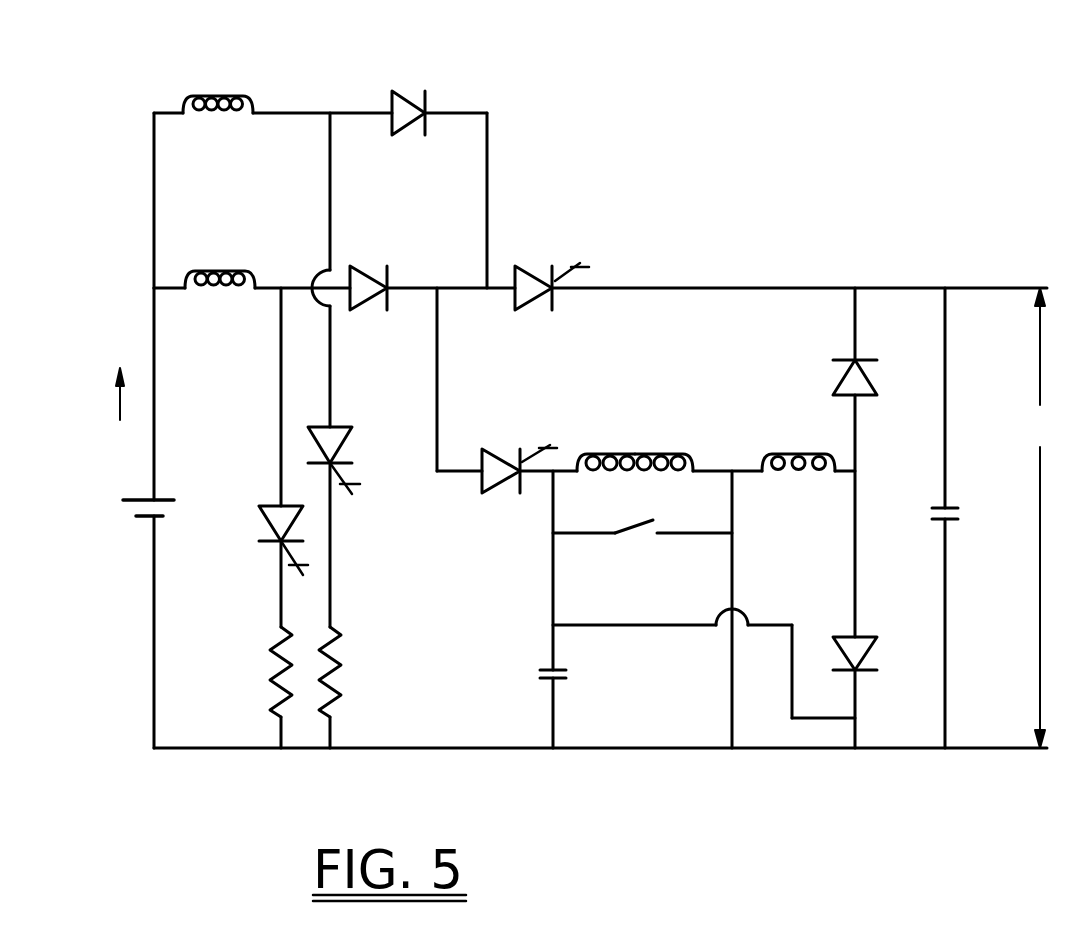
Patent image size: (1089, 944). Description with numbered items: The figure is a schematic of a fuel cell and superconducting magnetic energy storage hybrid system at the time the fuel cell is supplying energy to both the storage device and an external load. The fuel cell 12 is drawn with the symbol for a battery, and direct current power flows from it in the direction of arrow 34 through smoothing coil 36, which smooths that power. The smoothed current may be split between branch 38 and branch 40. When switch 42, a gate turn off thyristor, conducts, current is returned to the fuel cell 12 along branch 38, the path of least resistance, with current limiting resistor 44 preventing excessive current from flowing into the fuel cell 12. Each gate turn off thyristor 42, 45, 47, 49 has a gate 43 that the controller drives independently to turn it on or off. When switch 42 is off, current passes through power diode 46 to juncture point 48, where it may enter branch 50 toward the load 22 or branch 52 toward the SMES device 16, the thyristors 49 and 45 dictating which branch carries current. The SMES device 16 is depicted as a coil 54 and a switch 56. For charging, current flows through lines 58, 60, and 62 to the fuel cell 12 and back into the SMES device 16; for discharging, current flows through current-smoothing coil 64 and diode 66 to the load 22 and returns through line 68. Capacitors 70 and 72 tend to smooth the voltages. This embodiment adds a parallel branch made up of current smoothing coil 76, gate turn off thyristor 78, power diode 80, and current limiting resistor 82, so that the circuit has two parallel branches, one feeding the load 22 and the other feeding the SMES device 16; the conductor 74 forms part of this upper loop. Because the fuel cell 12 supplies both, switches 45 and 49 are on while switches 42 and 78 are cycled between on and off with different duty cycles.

The fuel cell 12 is at (135, 519).
The SMES device 16 is at (617, 456).
The load 22 is at (1039, 518).
The arrow 34 is at (116, 411).
The smoothing coil 36 is at (218, 270).
The branch 38 is at (280, 366).
The branch 40 is at (299, 285).
The switch 42 is at (262, 523).
The gate 43 is at (575, 262).
The current limiting resistor 44 is at (275, 666).
The switch 45 is at (498, 491).
The power diode 46 is at (360, 263).
The gate turn off thyristor 47 is at (874, 648).
The juncture point 48 is at (437, 286).
The switch 49 is at (533, 280).
The branch 50 is at (710, 286).
The branch 52 is at (436, 383).
The coil 54 is at (677, 456).
The switch 56 is at (648, 520).
The line 58 is at (734, 572).
The line 60 is at (690, 750).
The line 62 is at (151, 668).
The current-smoothing coil 64 is at (800, 456).
The diode 66 is at (875, 378).
The line 68 is at (786, 667).
The capacitor 70 is at (950, 518).
The capacitor 72 is at (556, 682).
The conductor 74 is at (153, 198).
The current smoothing coil 76 is at (228, 93).
The gate turn off thyristor 78 is at (346, 446).
The power diode 80 is at (405, 91).
The current limiting resistor 82 is at (339, 679).